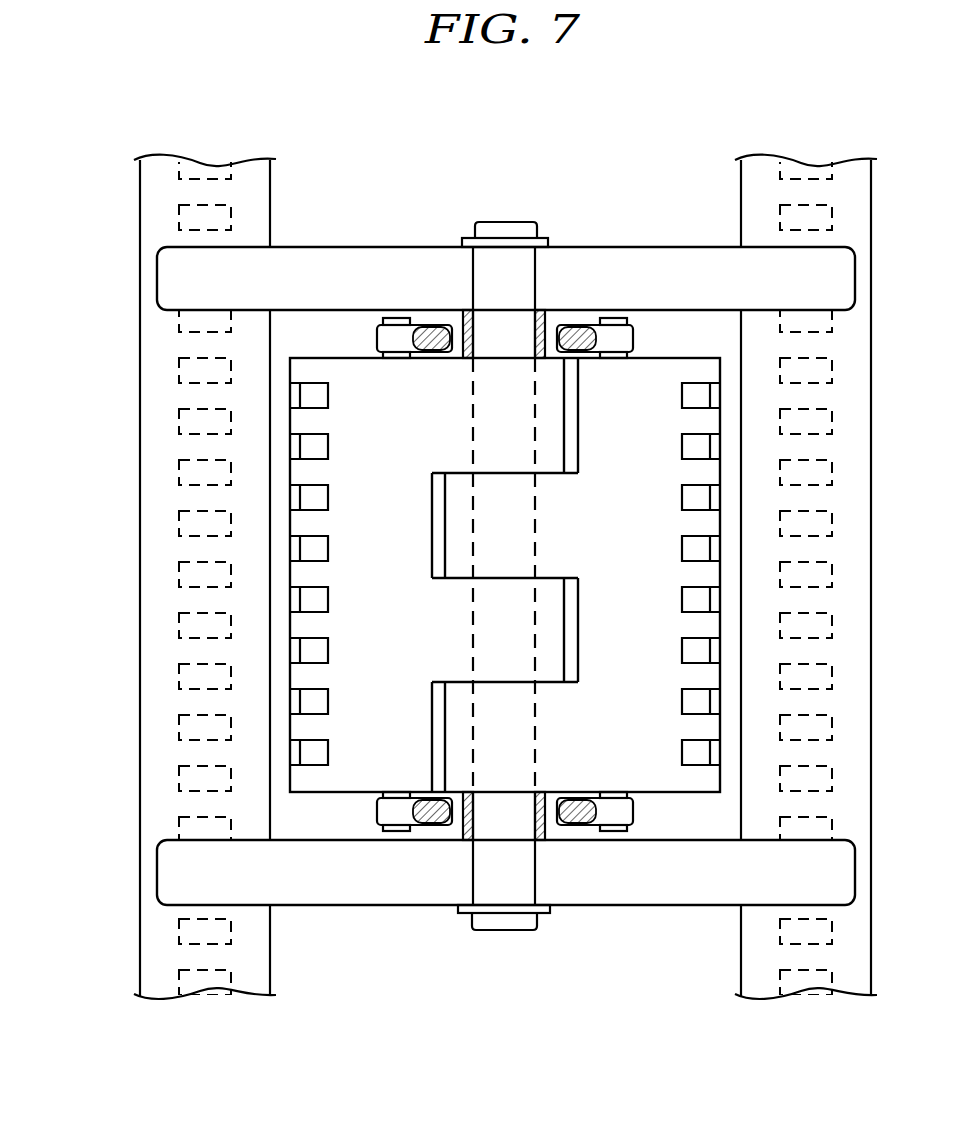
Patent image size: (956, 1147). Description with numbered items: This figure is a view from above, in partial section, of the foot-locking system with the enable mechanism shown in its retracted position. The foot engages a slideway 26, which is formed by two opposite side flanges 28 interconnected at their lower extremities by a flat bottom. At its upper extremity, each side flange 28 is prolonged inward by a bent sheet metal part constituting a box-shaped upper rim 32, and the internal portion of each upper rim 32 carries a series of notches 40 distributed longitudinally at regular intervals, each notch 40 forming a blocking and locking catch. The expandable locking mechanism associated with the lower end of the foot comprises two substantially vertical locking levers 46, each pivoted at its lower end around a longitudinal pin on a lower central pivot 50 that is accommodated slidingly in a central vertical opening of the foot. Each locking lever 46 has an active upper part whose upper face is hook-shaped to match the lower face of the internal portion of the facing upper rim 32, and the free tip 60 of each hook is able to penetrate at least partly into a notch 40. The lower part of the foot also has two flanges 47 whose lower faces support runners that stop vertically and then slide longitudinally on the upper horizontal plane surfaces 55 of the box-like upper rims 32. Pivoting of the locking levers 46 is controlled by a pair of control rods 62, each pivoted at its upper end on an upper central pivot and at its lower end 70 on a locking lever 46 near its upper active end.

The slideway 26 is at (118, 724).
The side flange 28 is at (140, 775).
The upper rim 32 is at (272, 195).
The notch 40 is at (180, 362).
The locking lever 46 is at (632, 546).
The flange 47 is at (327, 271).
The lower central pivot 50 is at (527, 275).
The upper horizontal plane surface 55 is at (160, 600).
The free tip 60 is at (295, 522).
The control rod 62 is at (440, 344).
The lower end of control rod 70 is at (397, 321).